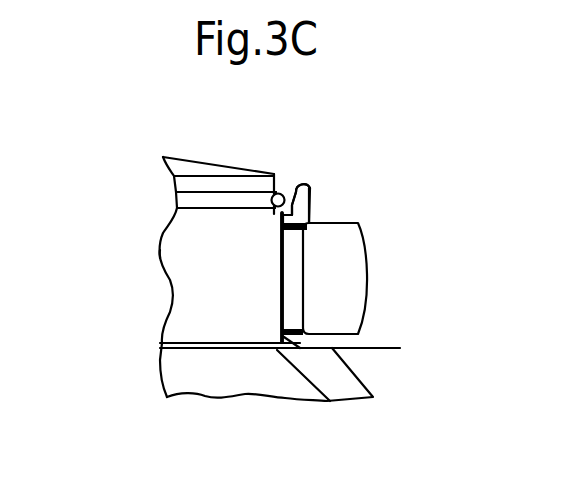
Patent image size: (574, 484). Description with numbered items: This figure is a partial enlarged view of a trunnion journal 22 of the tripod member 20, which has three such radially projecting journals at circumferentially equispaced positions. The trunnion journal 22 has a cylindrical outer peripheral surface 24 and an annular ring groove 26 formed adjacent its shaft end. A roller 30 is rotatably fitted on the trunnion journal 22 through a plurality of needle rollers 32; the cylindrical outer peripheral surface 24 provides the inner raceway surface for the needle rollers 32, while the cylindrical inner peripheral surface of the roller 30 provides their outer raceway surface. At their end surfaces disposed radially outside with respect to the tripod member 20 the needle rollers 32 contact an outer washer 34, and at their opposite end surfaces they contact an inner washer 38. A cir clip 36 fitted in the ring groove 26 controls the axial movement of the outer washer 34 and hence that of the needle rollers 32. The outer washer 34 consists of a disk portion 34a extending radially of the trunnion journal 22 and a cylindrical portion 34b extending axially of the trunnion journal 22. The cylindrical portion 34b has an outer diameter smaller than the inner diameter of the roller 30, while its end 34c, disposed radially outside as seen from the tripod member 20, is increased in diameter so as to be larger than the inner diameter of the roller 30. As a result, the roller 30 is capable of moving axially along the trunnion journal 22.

The tripod member 20 is at (357, 383).
The trunnion journal 22 is at (205, 165).
The cylindrical outer peripheral surface 24 is at (178, 305).
The annular ring groove 26 is at (172, 194).
The roller 30 is at (355, 254).
The needle rollers 32 is at (297, 287).
The outer washer 34 is at (303, 178).
The disk portion 34a is at (281, 229).
The cylindrical portion 34b is at (320, 201).
The end 34c is at (318, 167).
The cir clip 36 is at (283, 192).
The inner washer 38 is at (345, 347).